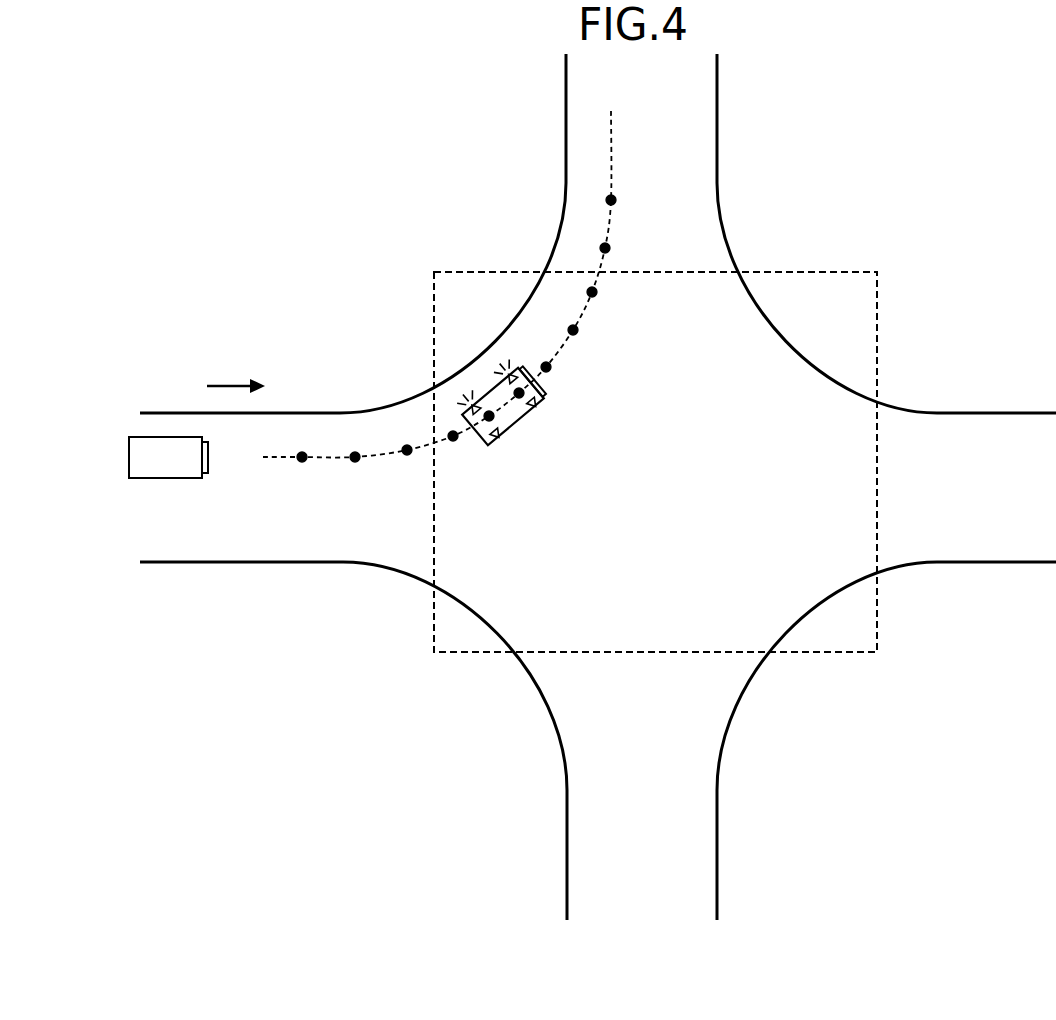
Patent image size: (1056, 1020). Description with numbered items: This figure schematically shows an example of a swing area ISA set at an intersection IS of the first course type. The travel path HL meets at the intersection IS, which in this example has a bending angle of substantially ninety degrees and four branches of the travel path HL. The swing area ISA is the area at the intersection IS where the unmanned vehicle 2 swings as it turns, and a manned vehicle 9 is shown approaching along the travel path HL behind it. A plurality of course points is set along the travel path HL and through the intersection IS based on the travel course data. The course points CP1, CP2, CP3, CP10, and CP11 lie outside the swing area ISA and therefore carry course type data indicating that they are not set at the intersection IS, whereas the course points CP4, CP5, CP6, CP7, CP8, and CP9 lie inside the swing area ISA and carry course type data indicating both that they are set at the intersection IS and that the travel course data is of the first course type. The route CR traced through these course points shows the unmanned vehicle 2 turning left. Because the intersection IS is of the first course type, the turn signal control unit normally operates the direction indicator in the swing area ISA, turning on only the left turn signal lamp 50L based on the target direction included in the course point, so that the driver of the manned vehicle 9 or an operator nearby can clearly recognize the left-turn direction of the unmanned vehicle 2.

The unmanned vehicle 2 is at (490, 447).
The manned vehicle 9 is at (162, 480).
The left turn signal lamp 50L is at (513, 370).
The course point CP1 is at (302, 463).
The course point CP2 is at (355, 463).
The course point CP3 is at (407, 456).
The course point CP4 is at (454, 442).
The course point CP5 is at (501, 428).
The course point CP6 is at (536, 394).
The course point CP7 is at (552, 367).
The course point CP8 is at (579, 331).
The course point CP9 is at (598, 292).
The course point CP10 is at (611, 249).
The course point CP11 is at (617, 200).
The travel route CR is at (612, 160).
The intersection IS is at (804, 240).
The swing area ISA is at (878, 620).
The travel path HL is at (275, 566).